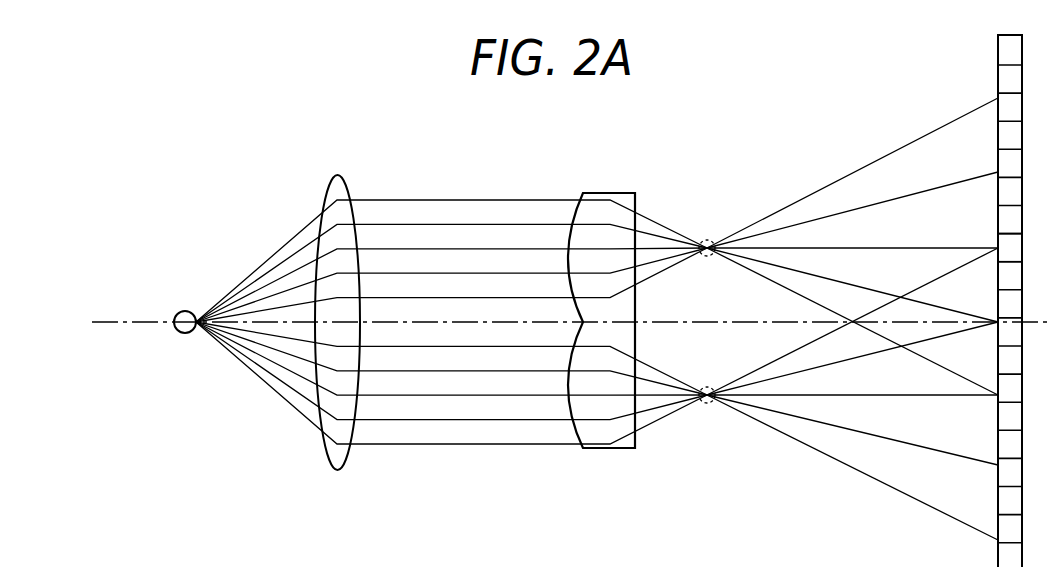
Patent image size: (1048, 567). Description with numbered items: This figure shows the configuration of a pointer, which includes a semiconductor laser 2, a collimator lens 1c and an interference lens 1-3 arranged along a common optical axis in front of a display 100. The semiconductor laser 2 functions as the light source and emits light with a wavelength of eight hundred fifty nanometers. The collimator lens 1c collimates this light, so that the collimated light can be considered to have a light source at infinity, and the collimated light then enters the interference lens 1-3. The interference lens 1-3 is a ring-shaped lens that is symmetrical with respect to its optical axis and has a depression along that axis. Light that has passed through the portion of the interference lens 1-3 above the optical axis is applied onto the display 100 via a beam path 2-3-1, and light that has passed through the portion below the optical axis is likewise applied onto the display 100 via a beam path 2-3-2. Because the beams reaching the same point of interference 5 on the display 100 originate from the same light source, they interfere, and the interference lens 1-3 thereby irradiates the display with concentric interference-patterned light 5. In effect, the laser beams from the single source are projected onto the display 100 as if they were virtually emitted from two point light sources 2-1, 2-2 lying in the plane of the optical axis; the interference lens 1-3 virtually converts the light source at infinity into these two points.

The semiconductor laser 2 is at (178, 312).
The collimator lens 1c is at (343, 173).
The interference lens 1-3 is at (612, 193).
The virtual point light source 2-1 is at (707, 257).
The virtual point light source 2-2 is at (707, 403).
The beam path 2-3-1 is at (793, 204).
The beam path 2-3-2 is at (826, 454).
The point of interference 5 is at (998, 247).
The display 100 is at (998, 50).